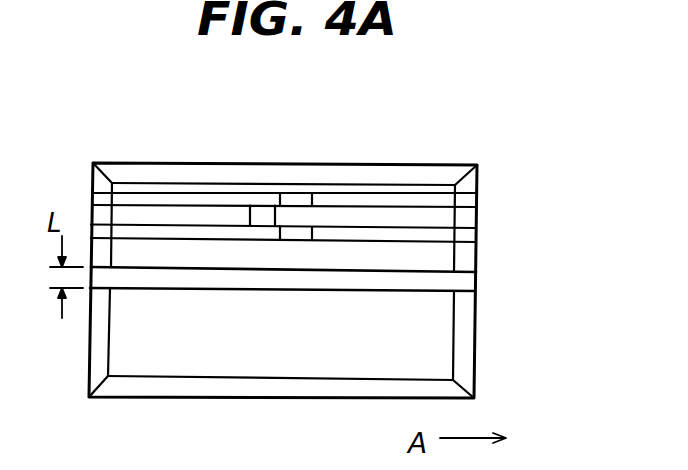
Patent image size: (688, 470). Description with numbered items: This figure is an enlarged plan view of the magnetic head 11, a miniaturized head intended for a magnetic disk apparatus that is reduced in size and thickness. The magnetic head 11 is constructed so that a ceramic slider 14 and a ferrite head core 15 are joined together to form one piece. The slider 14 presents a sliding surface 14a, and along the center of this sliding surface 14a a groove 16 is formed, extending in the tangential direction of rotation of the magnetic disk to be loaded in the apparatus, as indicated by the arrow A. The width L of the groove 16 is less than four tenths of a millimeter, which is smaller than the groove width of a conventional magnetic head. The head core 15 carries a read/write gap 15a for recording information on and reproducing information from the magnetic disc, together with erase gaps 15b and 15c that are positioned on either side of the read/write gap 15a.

The magnetic head 11 is at (290, 134).
The slider 14 is at (447, 341).
The sliding surface 14a is at (123, 328).
The head core 15 is at (470, 217).
The read/write gap 15a is at (252, 213).
The erase gap 15b is at (315, 202).
The erase gap 15c is at (313, 233).
The groove 16 is at (472, 278).